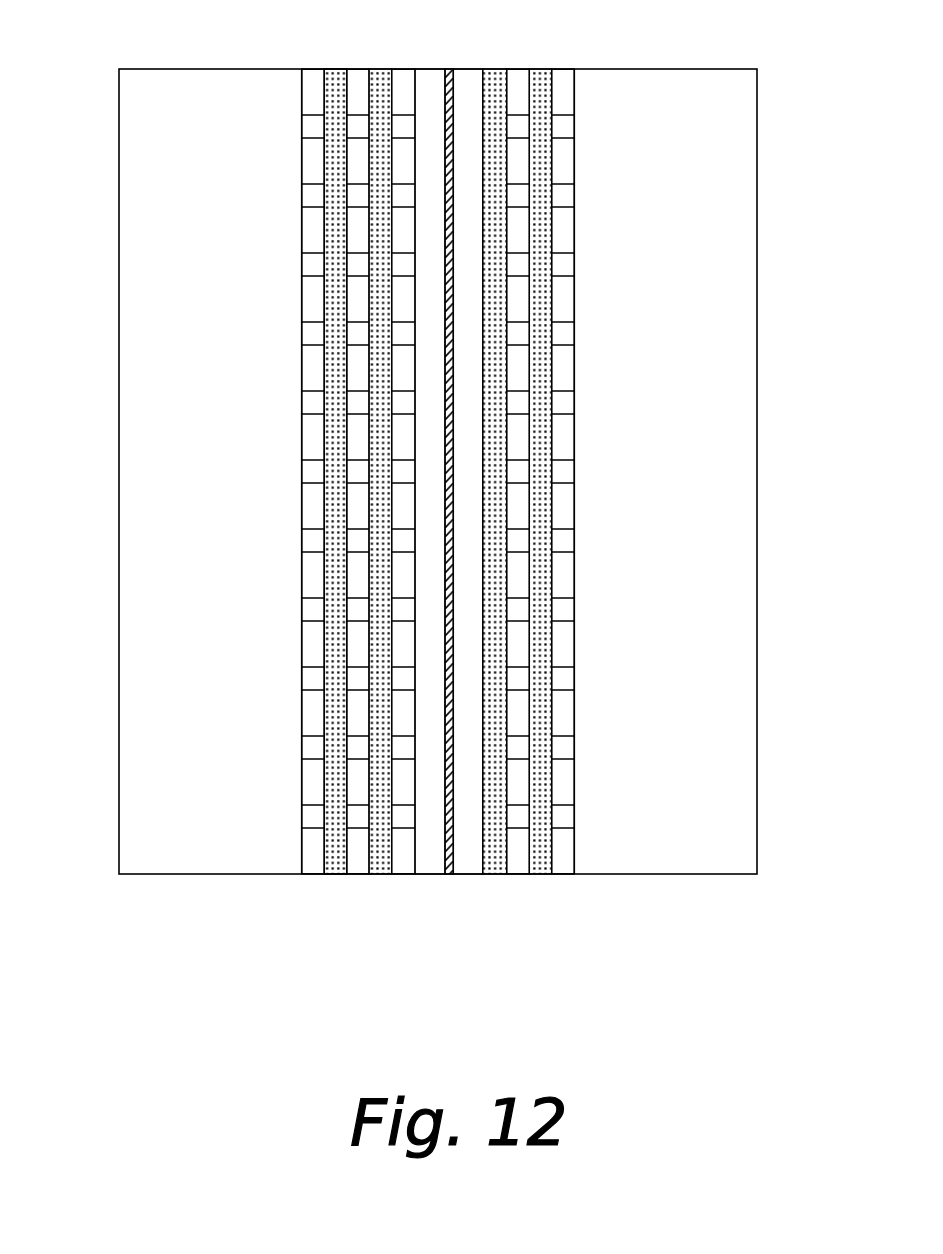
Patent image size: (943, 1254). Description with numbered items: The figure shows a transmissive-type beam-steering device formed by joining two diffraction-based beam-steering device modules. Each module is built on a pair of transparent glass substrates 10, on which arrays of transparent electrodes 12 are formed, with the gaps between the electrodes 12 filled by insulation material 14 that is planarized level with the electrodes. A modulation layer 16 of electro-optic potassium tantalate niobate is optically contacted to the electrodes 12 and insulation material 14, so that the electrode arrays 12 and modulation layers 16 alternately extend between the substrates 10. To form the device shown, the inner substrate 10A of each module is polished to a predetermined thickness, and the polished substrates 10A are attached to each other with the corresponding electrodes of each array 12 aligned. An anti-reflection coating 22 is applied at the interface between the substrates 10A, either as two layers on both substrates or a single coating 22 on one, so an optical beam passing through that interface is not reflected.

The substrate 10 is at (438, 471).
The polished substrate 10A is at (428, 875).
The electrodes 12 is at (313, 875).
The insulation material 14 is at (575, 814).
The modulation layer 16 is at (335, 68).
The anti-reflection coating 22 is at (449, 68).